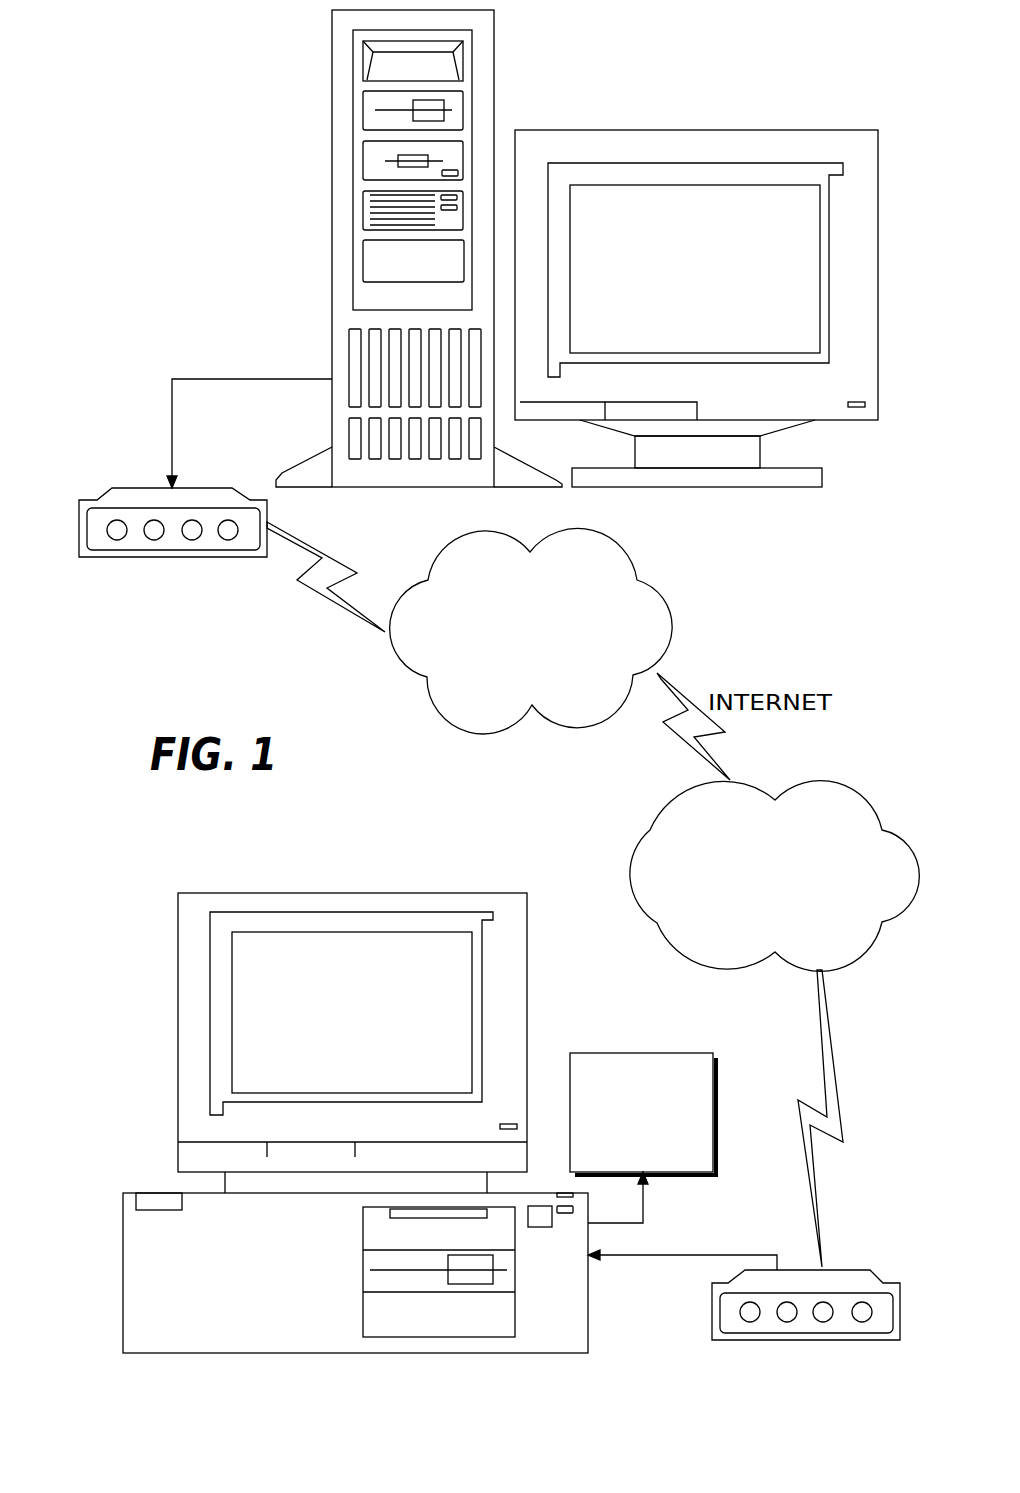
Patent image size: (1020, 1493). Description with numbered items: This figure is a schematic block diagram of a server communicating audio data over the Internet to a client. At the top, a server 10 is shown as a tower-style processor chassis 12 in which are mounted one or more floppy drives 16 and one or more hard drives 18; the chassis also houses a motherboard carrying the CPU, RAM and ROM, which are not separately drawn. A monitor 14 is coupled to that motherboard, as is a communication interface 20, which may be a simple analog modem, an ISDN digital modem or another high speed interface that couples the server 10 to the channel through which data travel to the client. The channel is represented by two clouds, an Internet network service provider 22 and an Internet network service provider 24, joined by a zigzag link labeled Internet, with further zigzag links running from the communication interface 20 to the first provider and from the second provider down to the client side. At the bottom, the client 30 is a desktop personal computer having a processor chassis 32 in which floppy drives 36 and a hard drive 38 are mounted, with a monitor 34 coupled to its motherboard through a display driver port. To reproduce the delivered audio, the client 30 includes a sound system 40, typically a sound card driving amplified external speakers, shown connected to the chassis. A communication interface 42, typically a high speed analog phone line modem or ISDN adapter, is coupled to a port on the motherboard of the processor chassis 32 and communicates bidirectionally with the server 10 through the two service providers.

The server 10 is at (98, 263).
The processor chassis 12 is at (332, 43).
The monitor 14 is at (686, 130).
The floppy drives 16 is at (363, 108).
The hard drives 18 is at (365, 211).
The communication interface 20 is at (214, 488).
The Internet network service provider 22 is at (437, 562).
The Internet network service provider 24 is at (638, 839).
The client 30 is at (85, 1043).
The processor chassis 32 is at (123, 1240).
The monitor 34 is at (528, 921).
The floppy drives 36 is at (515, 1233).
The hard drive 38 is at (513, 1308).
The sound system 40 is at (672, 1053).
The communication interface 42 is at (864, 1270).